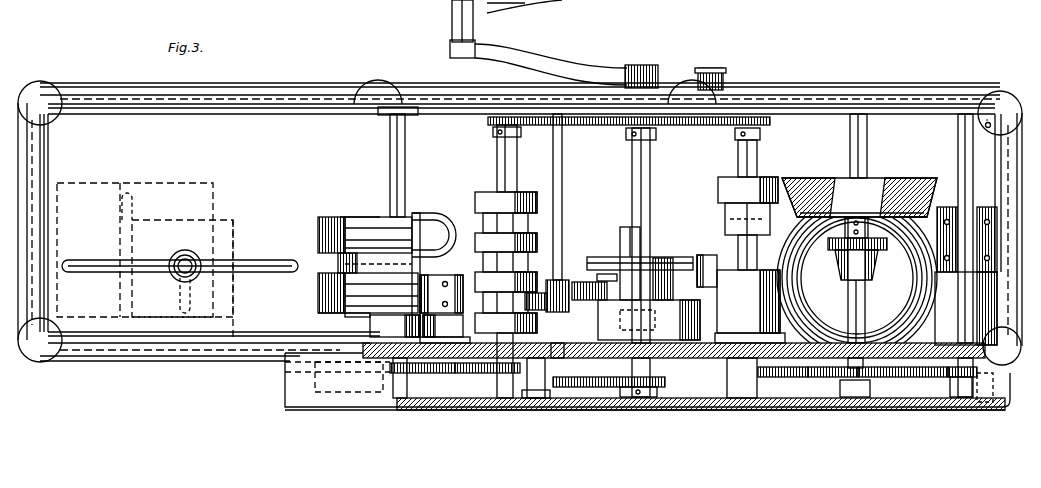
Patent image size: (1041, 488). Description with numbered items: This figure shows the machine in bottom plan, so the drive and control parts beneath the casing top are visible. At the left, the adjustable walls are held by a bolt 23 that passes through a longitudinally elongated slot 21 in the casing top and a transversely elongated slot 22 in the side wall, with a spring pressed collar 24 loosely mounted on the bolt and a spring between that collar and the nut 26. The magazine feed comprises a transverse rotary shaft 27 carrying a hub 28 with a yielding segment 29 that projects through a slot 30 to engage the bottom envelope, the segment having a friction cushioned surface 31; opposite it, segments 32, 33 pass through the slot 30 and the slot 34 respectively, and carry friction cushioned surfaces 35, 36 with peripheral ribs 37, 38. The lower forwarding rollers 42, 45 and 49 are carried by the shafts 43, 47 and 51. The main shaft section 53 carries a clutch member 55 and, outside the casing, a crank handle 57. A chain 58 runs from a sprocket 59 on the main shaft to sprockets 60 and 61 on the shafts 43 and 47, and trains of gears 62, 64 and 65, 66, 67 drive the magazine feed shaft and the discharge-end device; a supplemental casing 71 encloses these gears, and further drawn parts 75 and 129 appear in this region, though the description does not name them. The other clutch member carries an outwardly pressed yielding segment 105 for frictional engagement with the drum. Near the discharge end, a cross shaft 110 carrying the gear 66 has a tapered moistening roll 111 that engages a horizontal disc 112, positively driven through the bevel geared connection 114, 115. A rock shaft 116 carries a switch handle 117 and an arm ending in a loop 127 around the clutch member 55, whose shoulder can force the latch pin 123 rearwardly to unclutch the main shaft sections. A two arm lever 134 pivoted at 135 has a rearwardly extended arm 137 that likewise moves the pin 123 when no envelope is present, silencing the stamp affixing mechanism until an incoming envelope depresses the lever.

The longitudinally arranged elongated slot 21 is at (110, 260).
The transversely elongated slot 22 is at (182, 251).
The bolt 23 is at (176, 276).
The spring pressed collar 24 is at (197, 274).
The nut 26 is at (196, 261).
The rotary shaft 27 is at (390, 152).
The hub 28 is at (395, 326).
The yielding segment 29 is at (443, 326).
The slot 30 is at (432, 275).
The friction cushioned surface 31 is at (445, 332).
The segment 32 is at (322, 313).
The segment 33 is at (338, 217).
The slot 34 is at (434, 275).
The friction cushioned surface 35 is at (352, 317).
The friction cushioned surface 36 is at (362, 217).
The peripheral rib 37 is at (318, 293).
The peripheral rib 38 is at (318, 230).
The roller 42 is at (506, 295).
The transverse shaft 43 is at (497, 151).
The roller 45 is at (748, 301).
The shaft 47 is at (752, 175).
The roller 49 is at (966, 276).
The shaft 51 is at (958, 163).
The main shaft section 53 is at (632, 160).
The clutch member 55 is at (663, 258).
The crank handle 57 is at (528, 52).
The chain 58 is at (735, 131).
The sprocket 59 is at (626, 132).
The sprocket 60 is at (493, 131).
The sprocket 61 is at (768, 123).
The gear 62 is at (486, 380).
The gear 64 is at (422, 380).
The gear 65 is at (766, 377).
The gear 66 is at (903, 383).
The gear 67 is at (948, 377).
The supplemental casing 71 is at (816, 377).
The lower rack 75 is at (562, 384).
The yielding segment 105 is at (649, 320).
The cross shaft 110 is at (848, 283).
The tapered moistening roll 111 is at (859, 197).
The horizontal disc 112 is at (876, 292).
The bevel gear 114 is at (862, 208).
The bevel gear 115 is at (878, 255).
The rock shaft 116 is at (738, 164).
The switch handle 117 is at (724, 84).
The pin 123 is at (597, 277).
The loop 127 is at (625, 257).
The gear base plate 129 is at (780, 336).
The two arm lever 134 is at (585, 300).
The pivot 135 is at (558, 210).
The rearwardly extended arm 137 is at (706, 255).